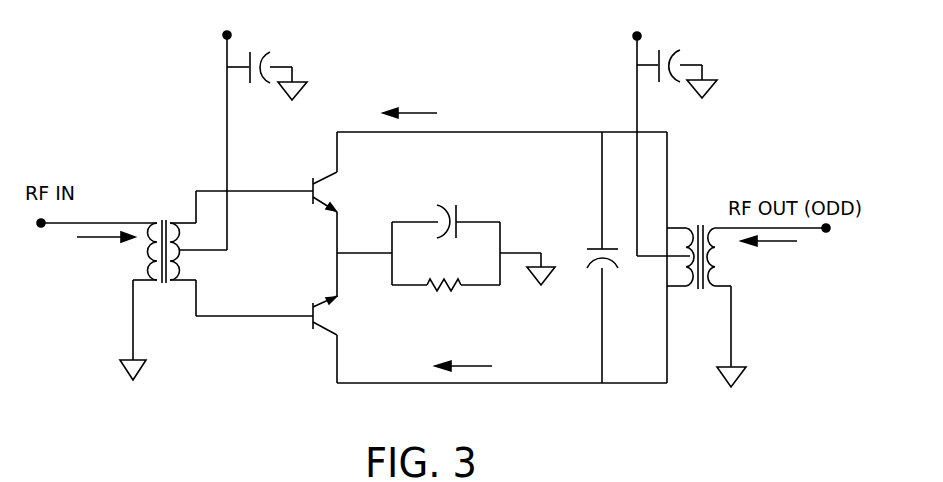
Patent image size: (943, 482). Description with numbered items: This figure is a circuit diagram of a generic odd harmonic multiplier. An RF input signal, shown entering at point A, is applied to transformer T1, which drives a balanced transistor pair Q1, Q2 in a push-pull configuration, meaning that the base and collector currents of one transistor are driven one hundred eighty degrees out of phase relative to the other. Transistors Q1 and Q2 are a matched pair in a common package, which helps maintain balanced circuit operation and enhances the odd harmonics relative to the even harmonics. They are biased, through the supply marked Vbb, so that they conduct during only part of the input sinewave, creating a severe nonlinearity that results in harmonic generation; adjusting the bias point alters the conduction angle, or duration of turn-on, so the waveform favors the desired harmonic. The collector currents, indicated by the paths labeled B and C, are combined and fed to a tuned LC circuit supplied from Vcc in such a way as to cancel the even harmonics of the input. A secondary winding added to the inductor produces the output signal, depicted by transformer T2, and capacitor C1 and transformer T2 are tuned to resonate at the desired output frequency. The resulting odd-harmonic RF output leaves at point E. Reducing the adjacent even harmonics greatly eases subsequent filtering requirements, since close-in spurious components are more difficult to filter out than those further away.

The transistor Q1 is at (337, 192).
The transistor Q2 is at (338, 318).
The transformer T1 is at (164, 267).
The transformer T2 is at (691, 271).
The capacitor C1 is at (591, 257).
The input signal direction A is at (96, 238).
The first collector current direction B is at (423, 115).
The second collector current direction C is at (476, 368).
The output signal direction E is at (777, 245).
The base bias supply Vbb is at (259, 127).
The collector supply Vcc is at (667, 130).